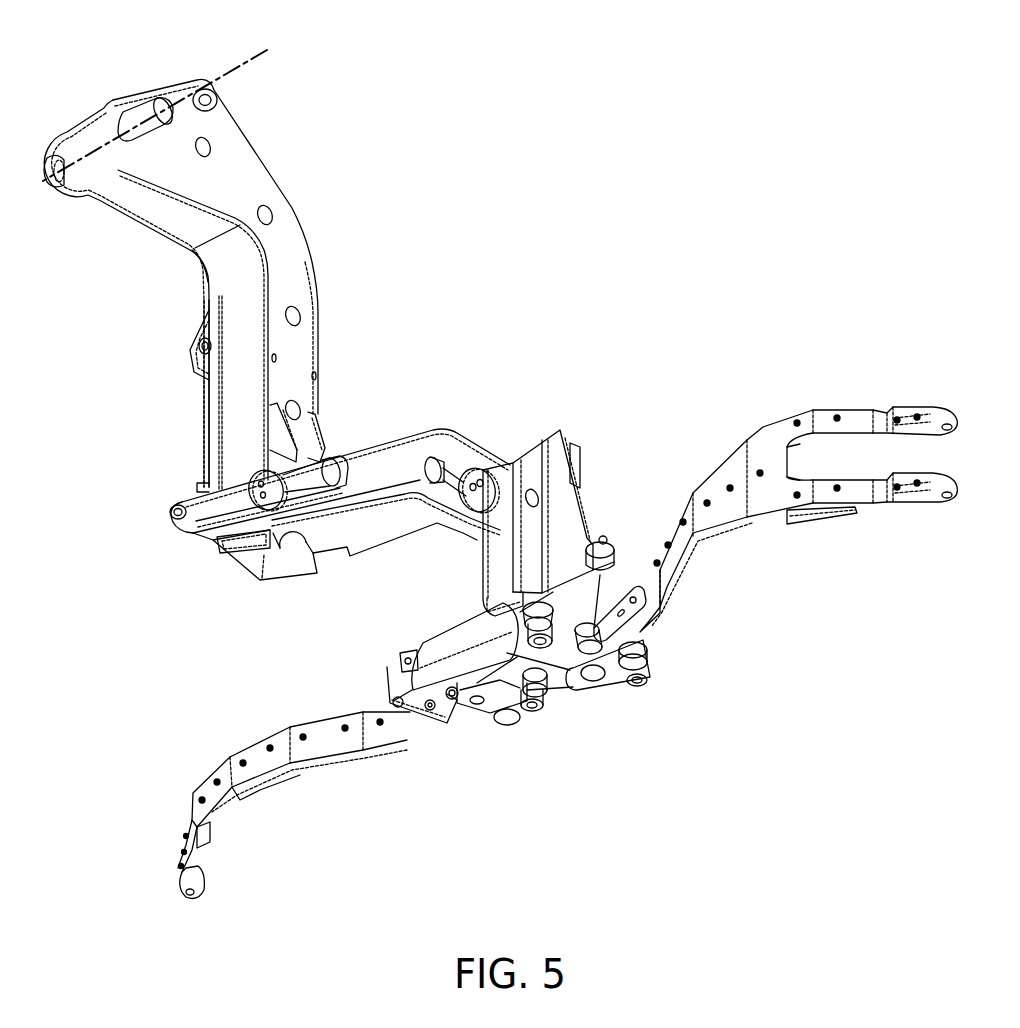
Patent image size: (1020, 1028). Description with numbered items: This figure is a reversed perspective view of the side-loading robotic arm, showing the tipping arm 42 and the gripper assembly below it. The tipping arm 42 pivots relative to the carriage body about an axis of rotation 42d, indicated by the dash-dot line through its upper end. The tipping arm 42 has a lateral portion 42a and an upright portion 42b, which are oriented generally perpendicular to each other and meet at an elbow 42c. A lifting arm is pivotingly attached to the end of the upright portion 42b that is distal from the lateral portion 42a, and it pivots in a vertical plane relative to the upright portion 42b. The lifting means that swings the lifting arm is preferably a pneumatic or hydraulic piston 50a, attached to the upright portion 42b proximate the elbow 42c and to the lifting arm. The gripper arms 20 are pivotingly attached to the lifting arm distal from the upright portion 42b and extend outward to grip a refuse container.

The tipping arm 42 is at (320, 180).
The lateral portion 42a is at (106, 205).
The upright portion 42b is at (306, 347).
The elbow 42c is at (200, 268).
The axis of rotation 42d is at (263, 51).
The piston 50a is at (204, 421).
The gripper arms 20 is at (641, 718).